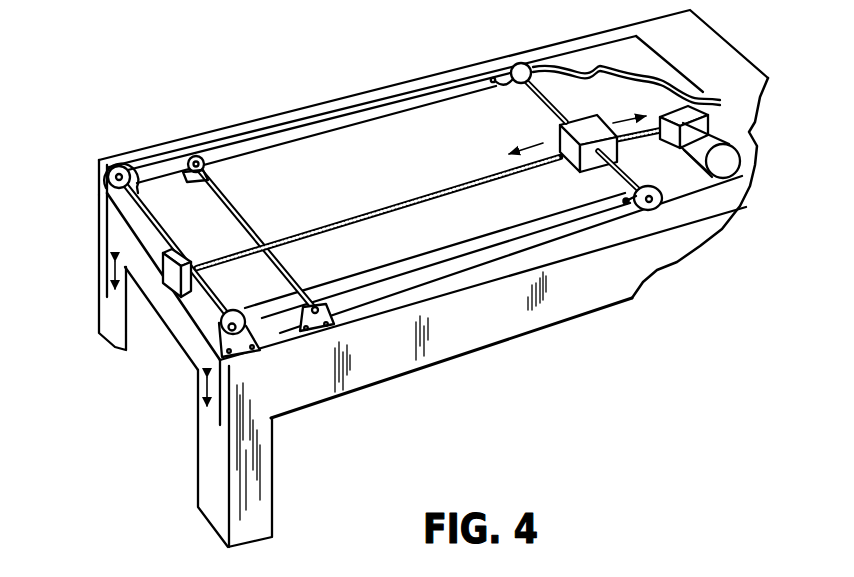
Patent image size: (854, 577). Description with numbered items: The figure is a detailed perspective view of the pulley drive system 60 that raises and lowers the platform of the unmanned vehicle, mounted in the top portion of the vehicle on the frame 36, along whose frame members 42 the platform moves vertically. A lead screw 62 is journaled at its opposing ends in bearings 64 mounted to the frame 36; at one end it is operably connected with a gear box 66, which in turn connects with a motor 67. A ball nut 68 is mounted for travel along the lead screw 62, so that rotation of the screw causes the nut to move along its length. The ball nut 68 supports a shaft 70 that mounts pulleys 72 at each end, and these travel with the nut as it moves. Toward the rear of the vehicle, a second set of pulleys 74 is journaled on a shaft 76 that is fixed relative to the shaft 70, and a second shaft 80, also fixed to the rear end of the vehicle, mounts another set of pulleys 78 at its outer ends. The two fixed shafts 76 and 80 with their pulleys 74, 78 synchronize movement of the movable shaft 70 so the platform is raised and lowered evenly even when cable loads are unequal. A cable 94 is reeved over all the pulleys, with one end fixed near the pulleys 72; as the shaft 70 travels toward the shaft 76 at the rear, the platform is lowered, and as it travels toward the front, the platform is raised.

The frame 36 is at (418, 377).
The frame members 42 is at (98, 305).
The pulley drive system 60 is at (366, 78).
The lead screw 62 is at (347, 219).
The bearings 64 is at (180, 290).
The gear box 66 is at (662, 112).
The motor 67 is at (723, 179).
The ball nut 68 is at (575, 175).
The shaft 70 is at (541, 105).
The pulleys 72 is at (524, 63).
The second set of pulleys 74 is at (133, 165).
The shaft 76 is at (162, 228).
The pulleys 78 is at (202, 157).
The second shaft 80 is at (243, 218).
The cable 94 is at (370, 124).